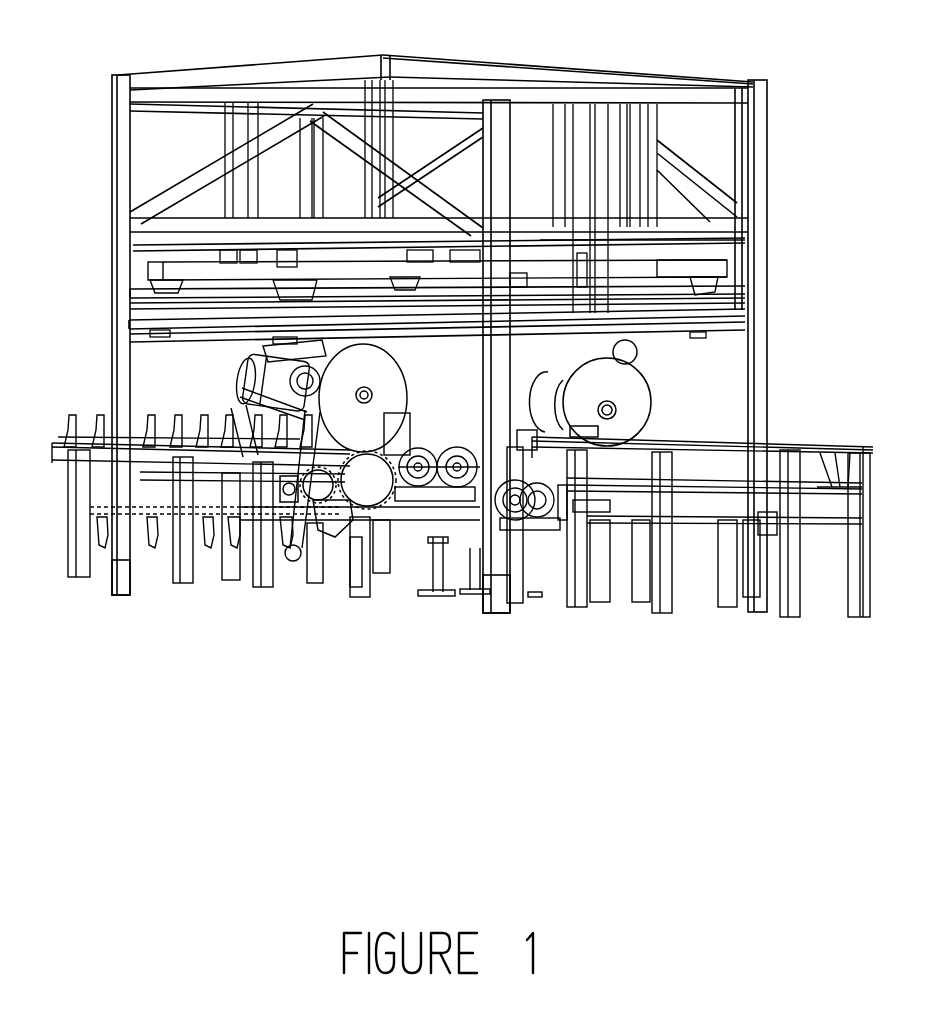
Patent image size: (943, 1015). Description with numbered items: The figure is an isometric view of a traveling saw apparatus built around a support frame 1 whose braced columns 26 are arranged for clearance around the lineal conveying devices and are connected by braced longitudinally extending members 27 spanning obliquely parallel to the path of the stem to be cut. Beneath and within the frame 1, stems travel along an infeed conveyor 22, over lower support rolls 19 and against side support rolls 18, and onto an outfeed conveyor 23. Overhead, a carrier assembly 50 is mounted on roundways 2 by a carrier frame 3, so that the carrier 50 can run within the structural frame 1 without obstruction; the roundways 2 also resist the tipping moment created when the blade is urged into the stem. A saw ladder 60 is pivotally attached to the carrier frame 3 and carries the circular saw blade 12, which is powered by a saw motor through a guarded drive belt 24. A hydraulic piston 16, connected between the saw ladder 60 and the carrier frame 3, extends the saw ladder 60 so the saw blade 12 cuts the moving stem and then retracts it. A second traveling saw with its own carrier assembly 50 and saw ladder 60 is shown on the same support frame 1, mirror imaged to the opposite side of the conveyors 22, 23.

The support frame 1 is at (762, 143).
The longitudinally extending members 27 is at (537, 76).
The roundways 2 is at (133, 290).
The carrier frame 3 is at (155, 268).
The carrier assembly 50 is at (720, 265).
The infeed conveyor 22 is at (95, 420).
The outfeed conveyor 23 is at (785, 440).
The saw ladder 60 is at (630, 392).
The circular saw blade 12 is at (337, 437).
The hydraulic piston 16 is at (268, 385).
The guarded drive belt 24 is at (245, 385).
The side support rolls 18 is at (372, 447).
The lower support rolls 19 is at (395, 450).
The braced columns 26 is at (115, 592).